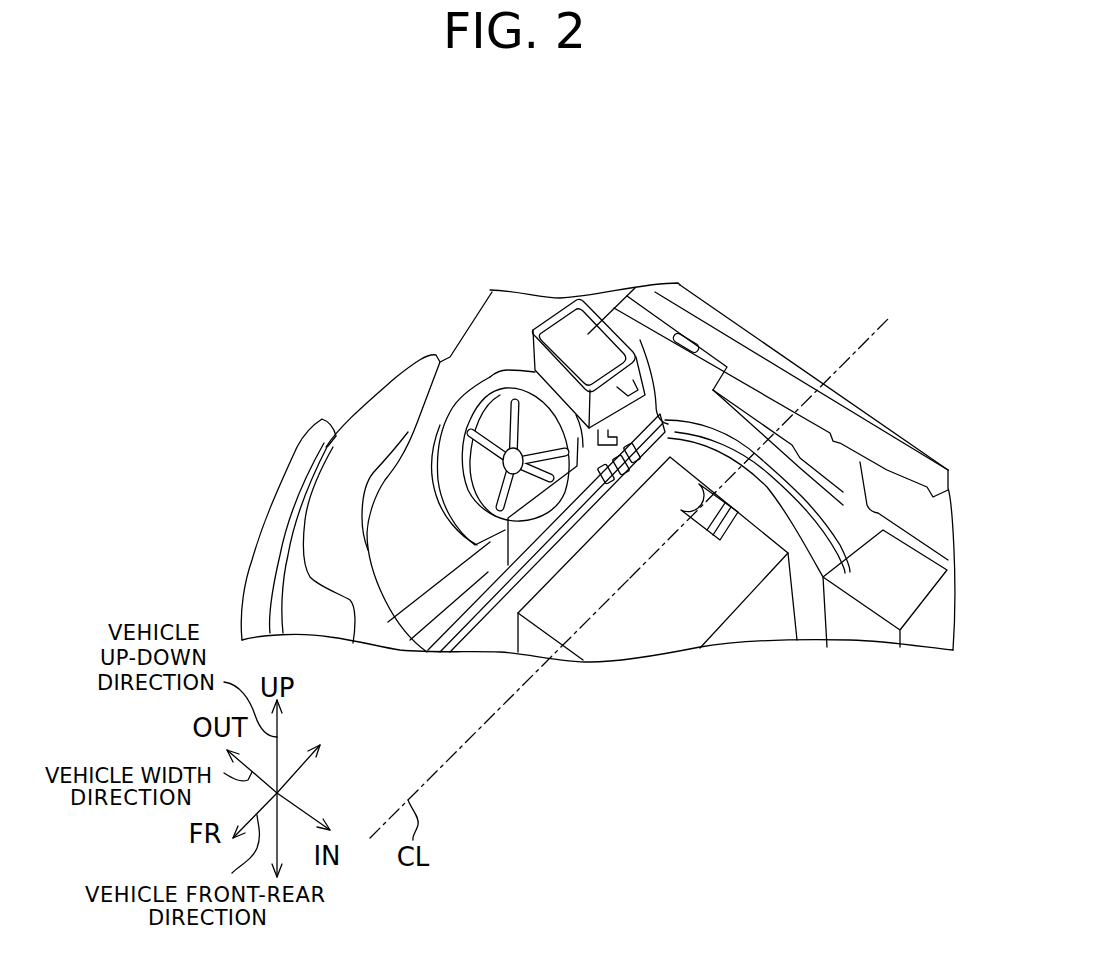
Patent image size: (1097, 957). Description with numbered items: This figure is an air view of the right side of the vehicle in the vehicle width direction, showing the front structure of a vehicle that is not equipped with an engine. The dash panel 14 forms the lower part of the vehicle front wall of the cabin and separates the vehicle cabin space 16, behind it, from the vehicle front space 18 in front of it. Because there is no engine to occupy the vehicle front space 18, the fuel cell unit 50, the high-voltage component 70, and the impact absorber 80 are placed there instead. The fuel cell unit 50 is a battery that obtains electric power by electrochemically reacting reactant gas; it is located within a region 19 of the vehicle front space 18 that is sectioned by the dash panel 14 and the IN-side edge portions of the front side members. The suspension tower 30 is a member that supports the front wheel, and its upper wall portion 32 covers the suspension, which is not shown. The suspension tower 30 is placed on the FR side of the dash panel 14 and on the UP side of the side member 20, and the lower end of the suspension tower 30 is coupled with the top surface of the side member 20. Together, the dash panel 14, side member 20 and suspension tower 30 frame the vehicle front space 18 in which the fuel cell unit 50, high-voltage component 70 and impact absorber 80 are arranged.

The dash panel 14 is at (717, 370).
The vehicle cabin space 16 is at (904, 386).
The vehicle front space 18 is at (500, 708).
The region 19 is at (493, 628).
The side member 20 is at (443, 591).
The suspension tower 30 is at (440, 490).
The upper wall portion 32 is at (489, 432).
The fuel cell unit 50 is at (703, 613).
The high-voltage component 70 is at (553, 303).
The impact absorber 80 is at (665, 413).